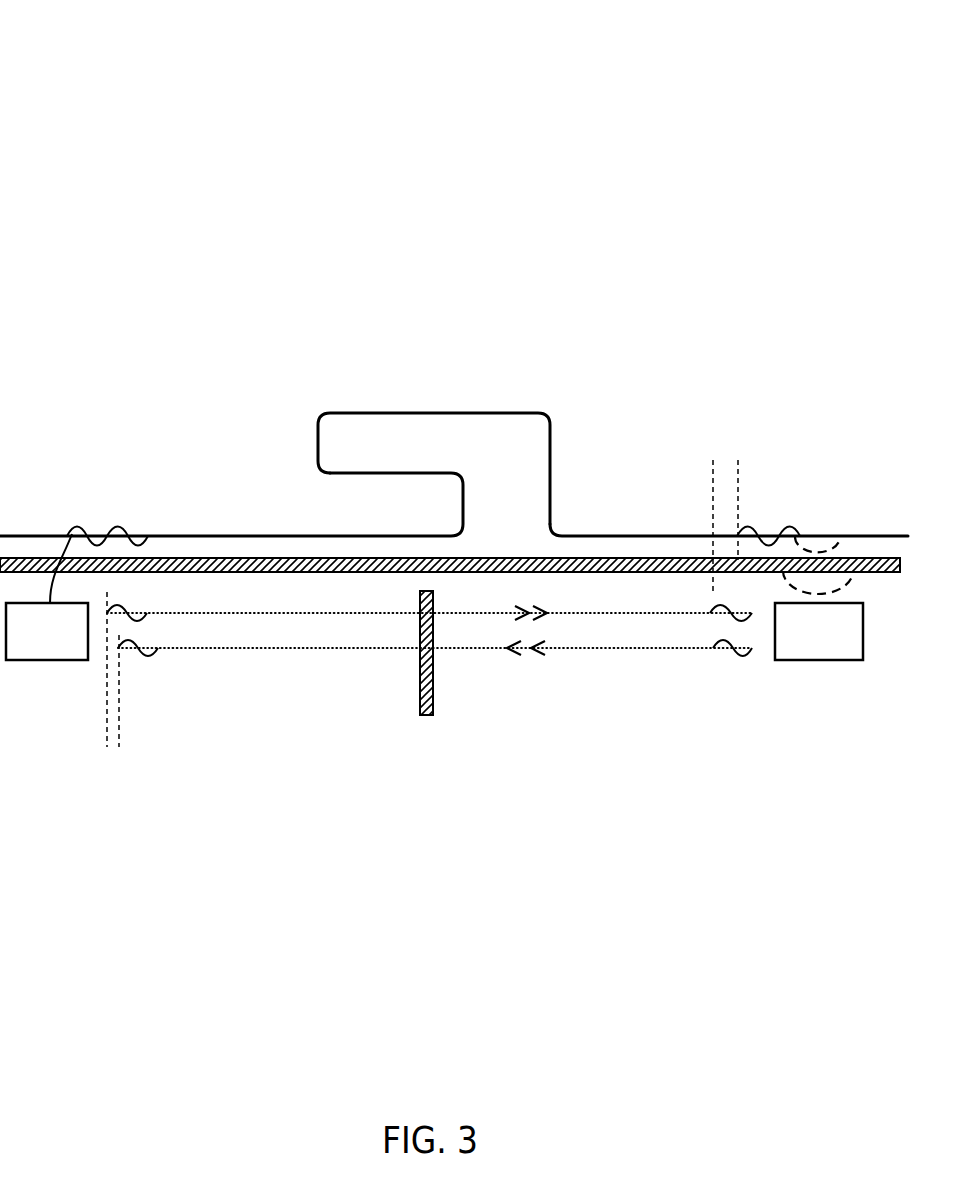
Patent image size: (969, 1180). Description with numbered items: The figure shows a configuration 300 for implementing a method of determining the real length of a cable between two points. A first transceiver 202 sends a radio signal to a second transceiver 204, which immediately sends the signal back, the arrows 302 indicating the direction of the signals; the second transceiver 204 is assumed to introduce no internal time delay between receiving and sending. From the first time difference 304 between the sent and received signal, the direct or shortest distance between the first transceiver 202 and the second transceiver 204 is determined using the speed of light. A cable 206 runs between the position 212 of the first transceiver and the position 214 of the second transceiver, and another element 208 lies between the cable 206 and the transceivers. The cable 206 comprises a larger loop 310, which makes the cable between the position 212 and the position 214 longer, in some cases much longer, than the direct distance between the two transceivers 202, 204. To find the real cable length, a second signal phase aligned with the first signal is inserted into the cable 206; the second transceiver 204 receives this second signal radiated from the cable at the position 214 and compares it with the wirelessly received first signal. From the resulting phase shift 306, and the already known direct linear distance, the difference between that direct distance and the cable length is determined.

The configuration 300 is at (123, 106).
The first transceiver 202 is at (24, 646).
The second transceiver 204 is at (796, 646).
The cable 206 is at (545, 405).
The another 208 is at (171, 548).
The position of the first transceiver 212 is at (68, 500).
The position of the second transceiver 214 is at (814, 512).
The arrows 302 is at (528, 690).
The time difference Δt1 304 is at (144, 803).
The phase shift Δt2 306 is at (739, 402).
The larger loop 310 is at (407, 458).